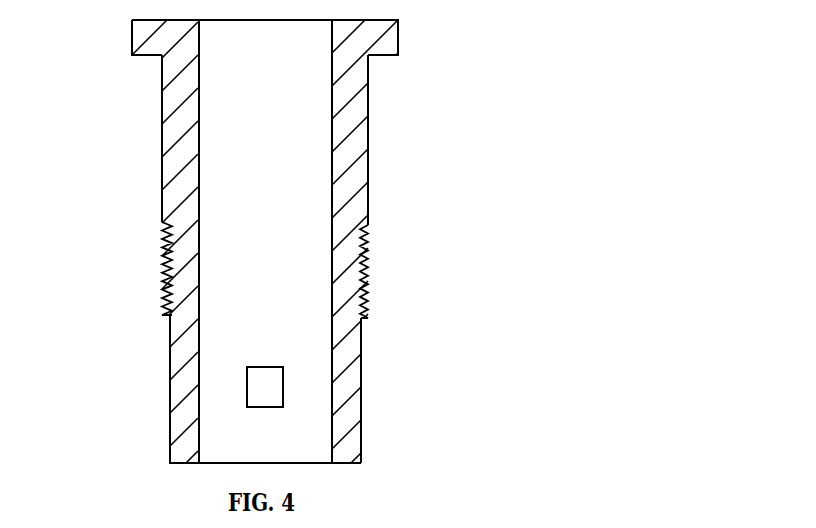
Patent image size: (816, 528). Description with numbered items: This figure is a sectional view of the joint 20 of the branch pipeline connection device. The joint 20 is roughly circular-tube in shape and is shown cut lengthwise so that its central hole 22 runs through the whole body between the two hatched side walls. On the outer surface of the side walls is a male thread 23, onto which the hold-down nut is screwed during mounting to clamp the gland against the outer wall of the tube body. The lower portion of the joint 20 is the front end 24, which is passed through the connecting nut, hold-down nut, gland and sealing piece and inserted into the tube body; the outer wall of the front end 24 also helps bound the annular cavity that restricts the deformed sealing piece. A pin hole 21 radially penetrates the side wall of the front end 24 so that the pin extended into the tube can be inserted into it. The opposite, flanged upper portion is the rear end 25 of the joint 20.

The joint 20 is at (177, 163).
The pin hole 21 is at (260, 392).
The central hole 22 is at (289, 218).
The male thread 23 is at (369, 283).
The front end 24 is at (348, 418).
The rear end 25 is at (346, 57).